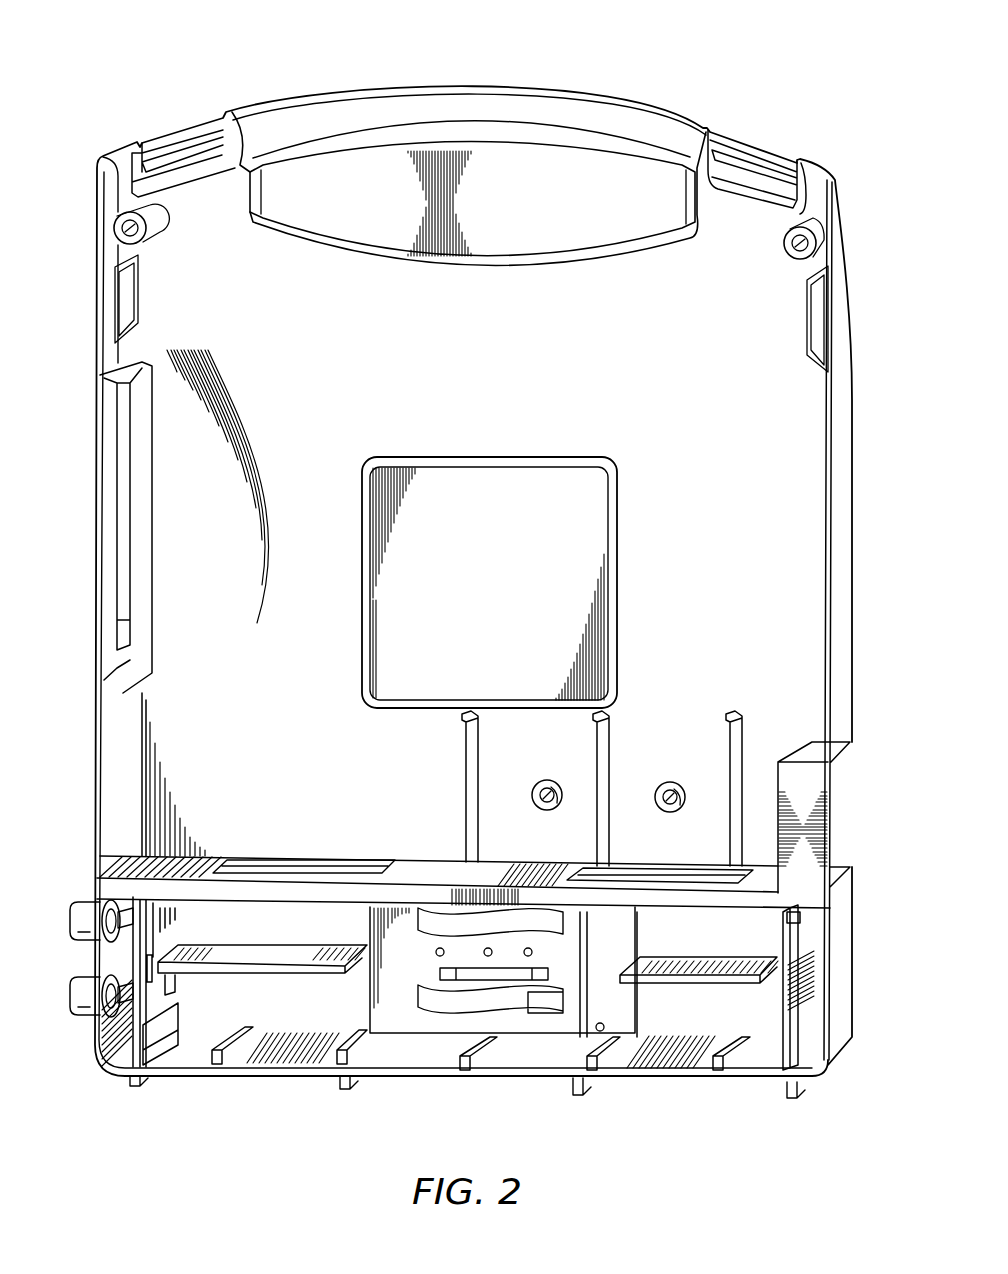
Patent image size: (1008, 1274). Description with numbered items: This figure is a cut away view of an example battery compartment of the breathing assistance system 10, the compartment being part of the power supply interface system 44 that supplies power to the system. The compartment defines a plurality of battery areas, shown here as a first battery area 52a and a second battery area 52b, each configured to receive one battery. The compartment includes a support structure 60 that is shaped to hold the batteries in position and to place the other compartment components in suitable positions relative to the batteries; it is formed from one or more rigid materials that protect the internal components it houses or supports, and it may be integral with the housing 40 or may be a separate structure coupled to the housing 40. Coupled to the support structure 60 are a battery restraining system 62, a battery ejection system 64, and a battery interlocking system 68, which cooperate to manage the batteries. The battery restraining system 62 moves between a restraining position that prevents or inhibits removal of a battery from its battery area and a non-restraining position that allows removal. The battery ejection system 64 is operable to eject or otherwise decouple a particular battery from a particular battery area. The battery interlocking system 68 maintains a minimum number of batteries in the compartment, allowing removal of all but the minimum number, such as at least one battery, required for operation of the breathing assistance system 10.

The breathing assistance system 10 is at (617, 61).
The housing 40 is at (843, 593).
The power supply interface system 44 is at (202, 1036).
The battery area 52a is at (292, 936).
The second battery area 52b is at (291, 1011).
The support structure 60 is at (710, 923).
The battery restraining system 62 is at (55, 902).
The battery ejection system 64 is at (444, 1046).
The battery interlocking system 68 is at (770, 917).